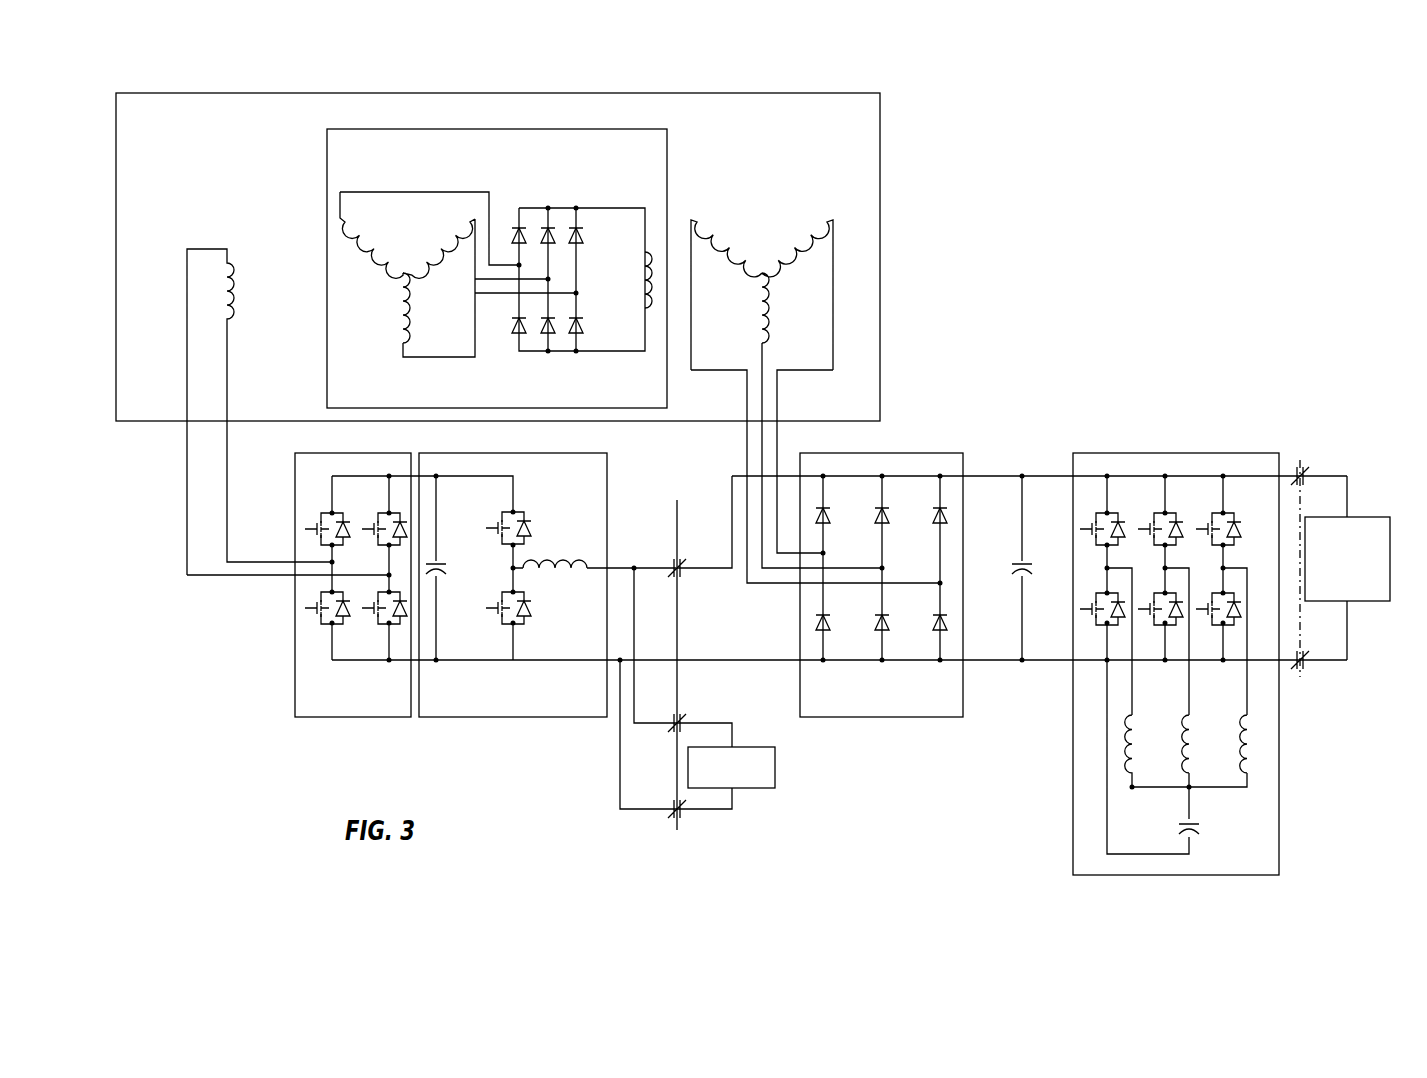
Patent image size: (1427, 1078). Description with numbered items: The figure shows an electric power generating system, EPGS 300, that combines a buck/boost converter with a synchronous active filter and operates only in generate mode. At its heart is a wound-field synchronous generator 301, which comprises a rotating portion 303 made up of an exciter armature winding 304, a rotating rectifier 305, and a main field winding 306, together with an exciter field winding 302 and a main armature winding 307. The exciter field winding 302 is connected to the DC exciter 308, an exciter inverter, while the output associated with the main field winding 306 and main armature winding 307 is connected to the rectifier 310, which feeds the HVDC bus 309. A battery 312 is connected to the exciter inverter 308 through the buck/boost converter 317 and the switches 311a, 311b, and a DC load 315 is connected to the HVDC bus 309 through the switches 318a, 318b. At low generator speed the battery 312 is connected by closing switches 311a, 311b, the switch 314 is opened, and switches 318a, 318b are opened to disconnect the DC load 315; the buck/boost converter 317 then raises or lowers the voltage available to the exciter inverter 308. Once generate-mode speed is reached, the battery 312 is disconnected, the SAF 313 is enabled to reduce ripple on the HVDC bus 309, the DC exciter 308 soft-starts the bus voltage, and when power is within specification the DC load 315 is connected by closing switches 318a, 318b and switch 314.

The EPGS 300 is at (1228, 200).
The WF synchronous generator 301 is at (883, 125).
The exciter field winding 302 is at (242, 250).
The rotating portion 303 is at (368, 410).
The exciter armature winding 304 is at (408, 216).
The rotating rectifier 305 is at (553, 178).
The main field winding 306 is at (635, 292).
The main armature winding 307 is at (758, 228).
The DC exciter 308 is at (353, 719).
The HVDC bus 309 is at (1064, 422).
The rectifier 310 is at (855, 719).
The switch 311a is at (670, 731).
The switch 311b is at (670, 813).
The battery 312 is at (777, 768).
The SAF 313 is at (1281, 833).
The switch 314 is at (670, 562).
The DC load 315 is at (1366, 603).
The buck/boost converter 317 is at (512, 719).
The switch 318a is at (1309, 473).
The switch 318b is at (1309, 666).